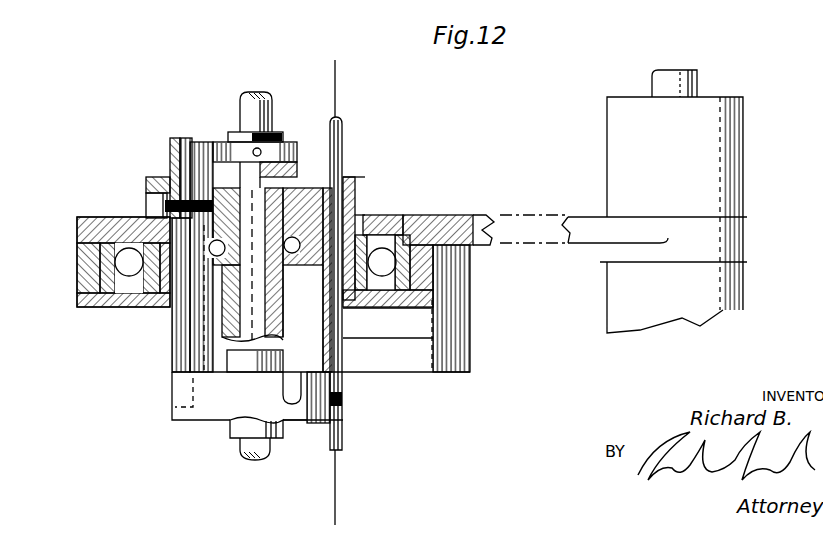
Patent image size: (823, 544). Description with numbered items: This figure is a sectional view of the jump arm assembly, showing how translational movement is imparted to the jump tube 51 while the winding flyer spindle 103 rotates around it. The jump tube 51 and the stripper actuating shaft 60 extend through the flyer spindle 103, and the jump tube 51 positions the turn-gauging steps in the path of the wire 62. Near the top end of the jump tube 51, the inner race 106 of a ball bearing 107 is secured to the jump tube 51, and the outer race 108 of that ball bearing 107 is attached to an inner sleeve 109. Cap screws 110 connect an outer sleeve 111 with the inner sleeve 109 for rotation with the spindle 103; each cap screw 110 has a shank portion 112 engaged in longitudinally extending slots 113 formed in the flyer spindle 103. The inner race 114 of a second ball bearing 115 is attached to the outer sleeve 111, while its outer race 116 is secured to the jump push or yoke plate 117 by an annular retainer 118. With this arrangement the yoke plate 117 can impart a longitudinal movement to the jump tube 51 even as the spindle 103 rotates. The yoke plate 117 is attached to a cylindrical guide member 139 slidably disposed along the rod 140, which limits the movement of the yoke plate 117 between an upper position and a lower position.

The jump tube 51 is at (287, 326).
The stripper actuating shaft 60 is at (273, 108).
The wire 62 is at (338, 97).
The spindle 103 is at (342, 401).
The inner race 106 is at (347, 186).
The ball bearing 107 is at (316, 236).
The outer race 108 is at (200, 262).
The inner sleeve 109 is at (77, 221).
The cap screws 110 is at (150, 204).
The outer sleeve 111 is at (367, 214).
The shank portion 112 is at (178, 205).
The slots 113 is at (299, 394).
The inner race 114 is at (125, 296).
The second ball bearing 115 is at (398, 276).
The outer race 116 is at (107, 270).
The jump push or yoke plate 117 is at (468, 216).
The annular retainer 118 is at (78, 285).
The cylindrical guide member 139 is at (746, 144).
The rod 140 is at (697, 83).